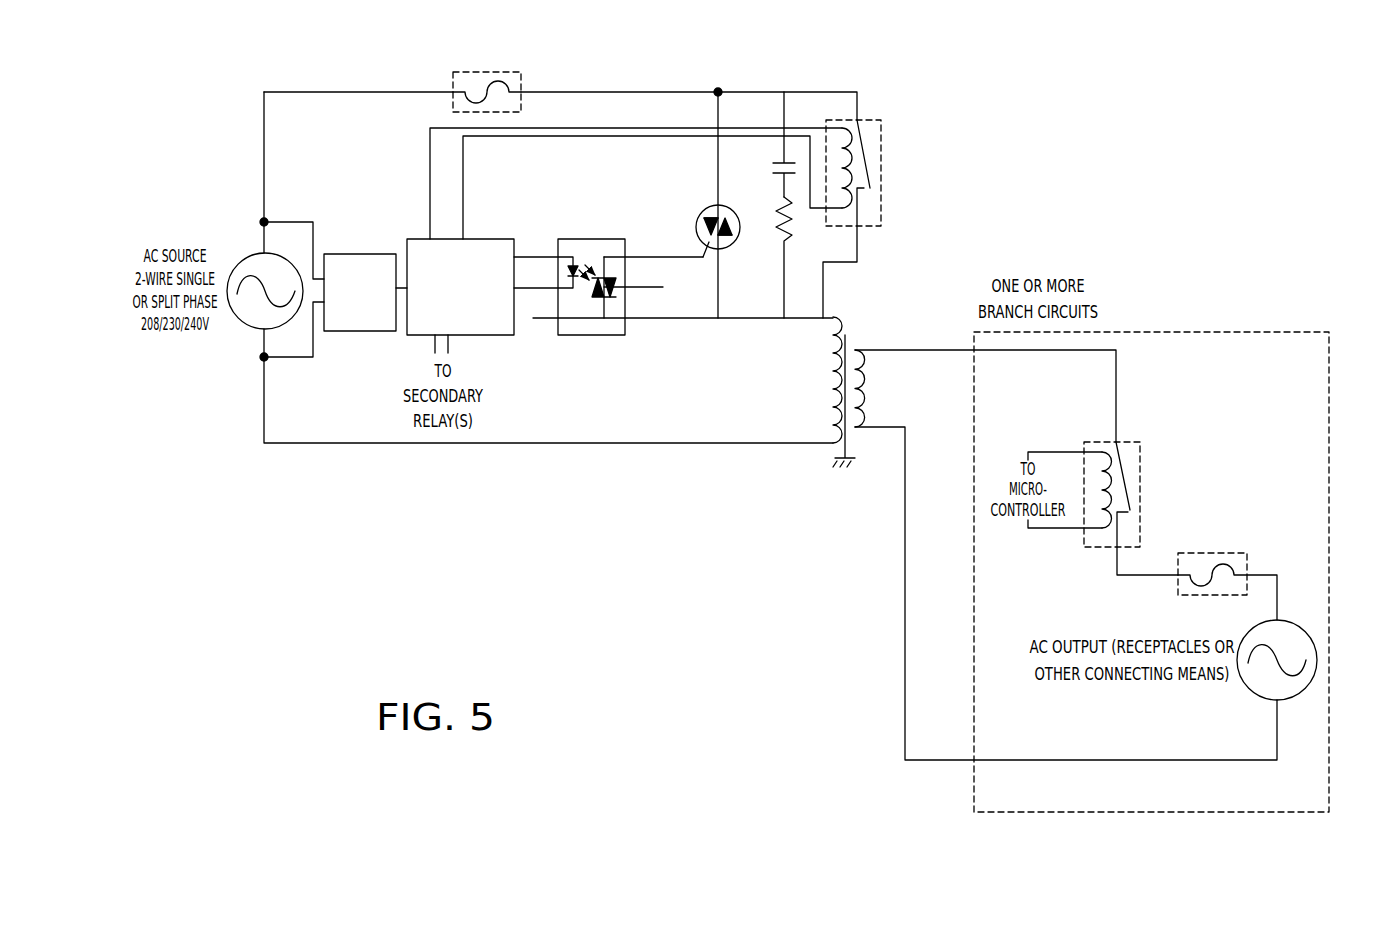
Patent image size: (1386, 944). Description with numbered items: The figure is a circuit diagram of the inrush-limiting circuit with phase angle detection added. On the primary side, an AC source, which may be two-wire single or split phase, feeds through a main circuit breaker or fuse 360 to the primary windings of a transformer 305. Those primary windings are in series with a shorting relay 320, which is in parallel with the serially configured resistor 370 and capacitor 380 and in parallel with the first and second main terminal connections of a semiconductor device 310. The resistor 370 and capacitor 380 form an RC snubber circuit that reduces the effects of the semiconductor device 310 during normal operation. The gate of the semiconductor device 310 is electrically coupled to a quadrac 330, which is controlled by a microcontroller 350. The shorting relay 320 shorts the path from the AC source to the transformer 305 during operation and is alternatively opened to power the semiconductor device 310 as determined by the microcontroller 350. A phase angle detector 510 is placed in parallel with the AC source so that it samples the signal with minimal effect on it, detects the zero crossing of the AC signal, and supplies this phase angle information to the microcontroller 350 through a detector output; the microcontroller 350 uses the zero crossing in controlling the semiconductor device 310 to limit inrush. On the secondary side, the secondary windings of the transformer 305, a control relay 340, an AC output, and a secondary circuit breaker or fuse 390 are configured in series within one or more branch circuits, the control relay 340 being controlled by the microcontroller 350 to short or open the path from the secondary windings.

The transformer 305 is at (826, 448).
The semiconductor device 310 is at (705, 272).
The shorting relay 320 is at (884, 152).
The quadrac 330 is at (593, 338).
The control relay 340 is at (1125, 421).
The microcontroller 350 is at (500, 338).
The main circuit breaker or fuse 360 is at (483, 67).
The resistor 370 is at (768, 215).
The capacitor 380 is at (786, 160).
The secondary circuit breaker or fuse 390 is at (1249, 565).
The phase angle detector 510 is at (360, 338).